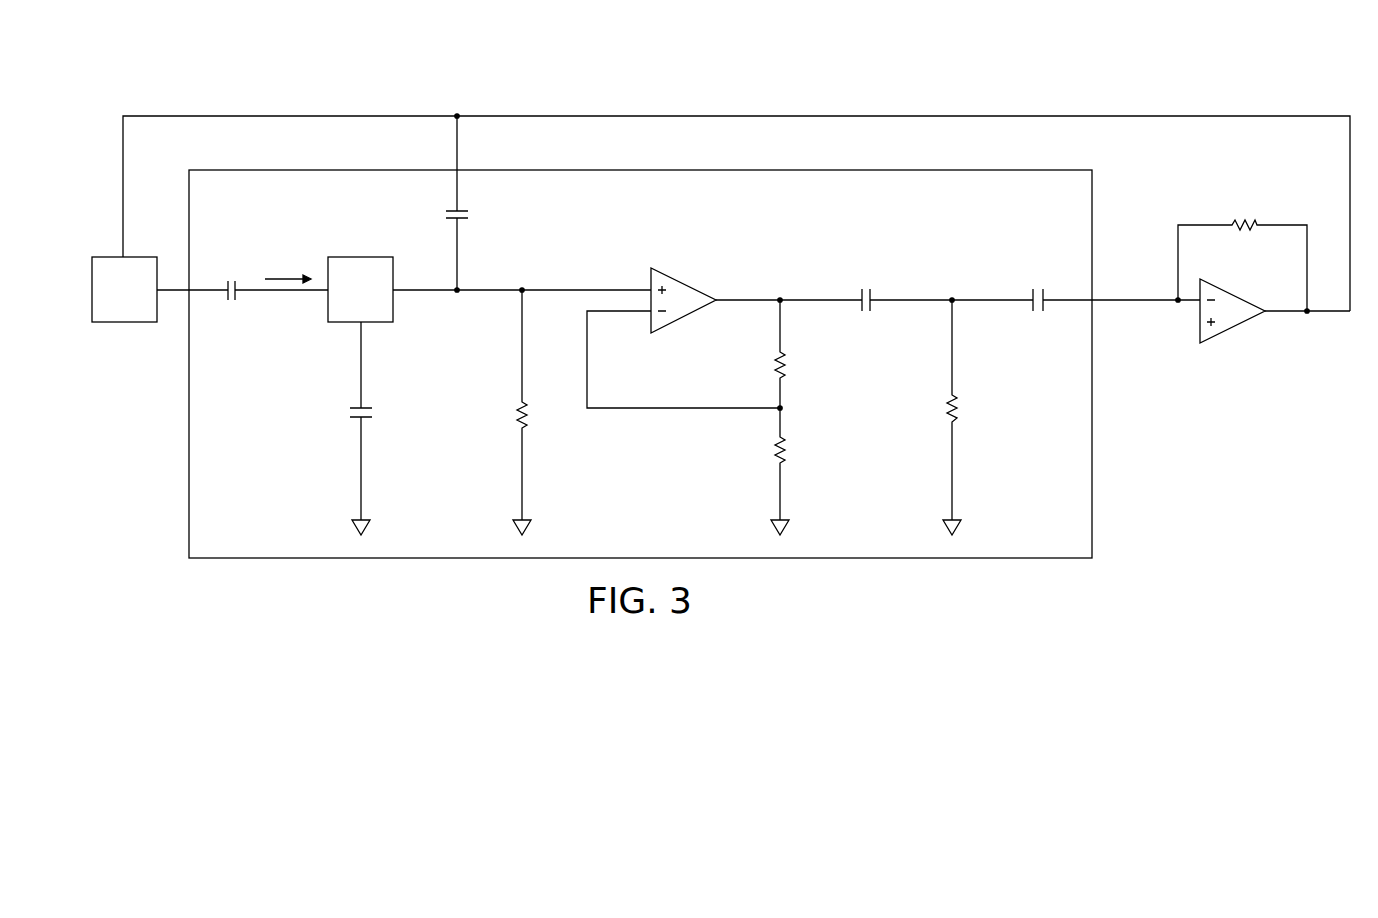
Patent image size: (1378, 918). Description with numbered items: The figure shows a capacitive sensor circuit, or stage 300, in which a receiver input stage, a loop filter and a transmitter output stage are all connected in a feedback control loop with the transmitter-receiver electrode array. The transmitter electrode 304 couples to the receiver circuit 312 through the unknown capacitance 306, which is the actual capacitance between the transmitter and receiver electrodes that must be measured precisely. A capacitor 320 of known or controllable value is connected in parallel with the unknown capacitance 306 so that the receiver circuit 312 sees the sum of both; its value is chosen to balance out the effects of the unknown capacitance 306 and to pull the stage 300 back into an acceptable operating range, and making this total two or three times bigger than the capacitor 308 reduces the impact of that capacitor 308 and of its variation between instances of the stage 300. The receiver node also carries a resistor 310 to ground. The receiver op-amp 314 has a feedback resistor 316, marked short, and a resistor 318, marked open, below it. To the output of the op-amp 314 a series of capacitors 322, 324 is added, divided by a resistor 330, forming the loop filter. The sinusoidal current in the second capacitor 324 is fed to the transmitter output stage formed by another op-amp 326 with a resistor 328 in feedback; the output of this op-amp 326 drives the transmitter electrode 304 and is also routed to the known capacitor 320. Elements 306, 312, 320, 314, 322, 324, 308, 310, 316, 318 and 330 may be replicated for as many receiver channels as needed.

The stage 300 is at (334, 67).
The transmitter electrode TX 304 is at (103, 256).
The capacitance Cx 306 is at (229, 303).
The capacitor C0 308 is at (348, 411).
The resistor R 310 is at (517, 411).
The receiver circuit 312 is at (349, 256).
The op-amp 314 is at (688, 281).
The feedback resistor Rf 316 is at (776, 362).
The resistor R1 318 is at (776, 447).
The capacitor Cp 320 is at (470, 214).
The capacitor C1 322 is at (871, 313).
The capacitor C2 324 is at (1043, 313).
The op-amp 326 is at (1232, 328).
The resistor Rf1 328 is at (1240, 232).
The resistor R2 330 is at (948, 403).